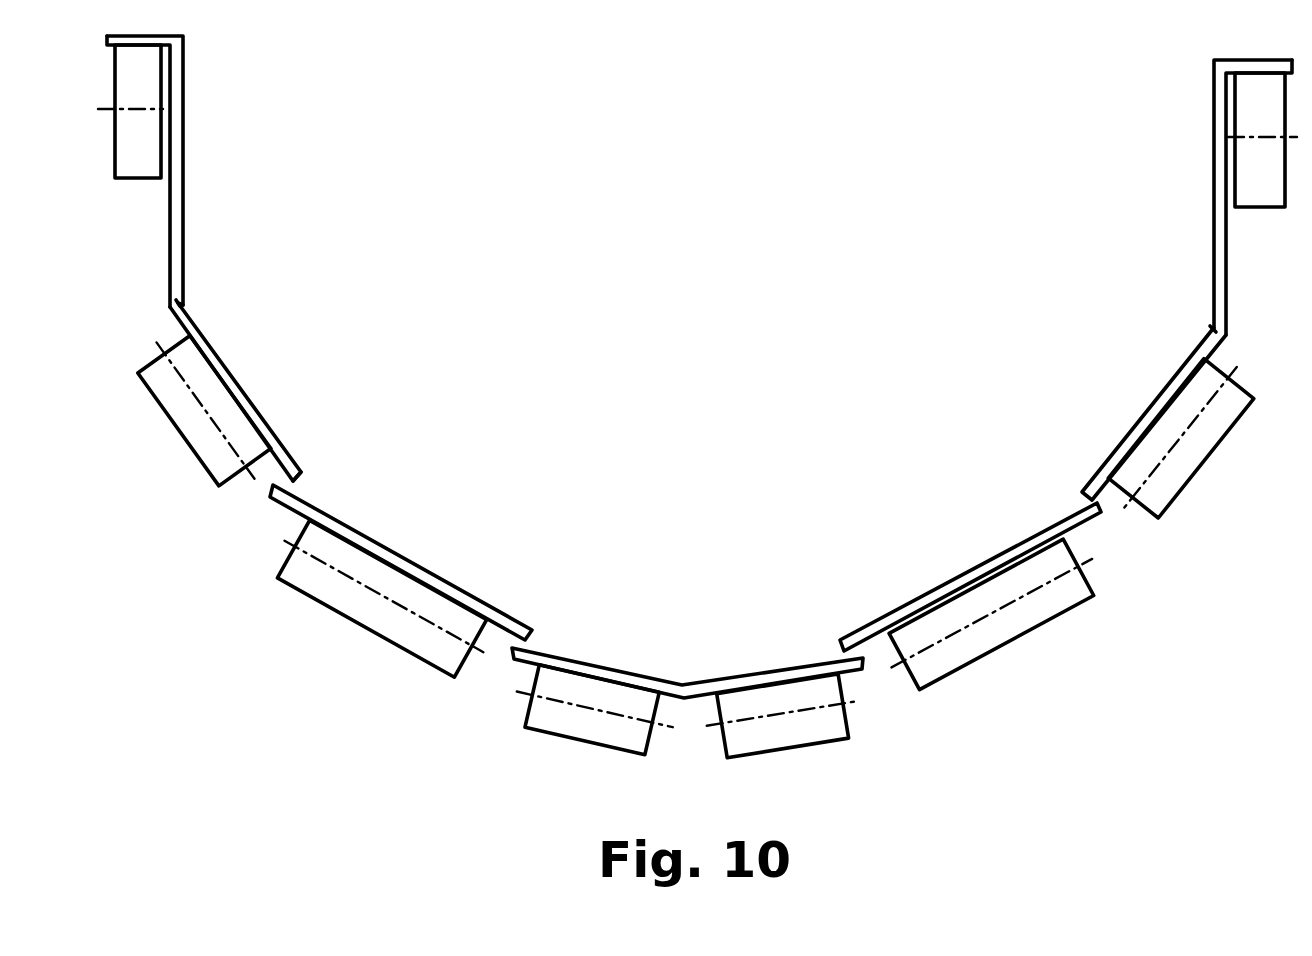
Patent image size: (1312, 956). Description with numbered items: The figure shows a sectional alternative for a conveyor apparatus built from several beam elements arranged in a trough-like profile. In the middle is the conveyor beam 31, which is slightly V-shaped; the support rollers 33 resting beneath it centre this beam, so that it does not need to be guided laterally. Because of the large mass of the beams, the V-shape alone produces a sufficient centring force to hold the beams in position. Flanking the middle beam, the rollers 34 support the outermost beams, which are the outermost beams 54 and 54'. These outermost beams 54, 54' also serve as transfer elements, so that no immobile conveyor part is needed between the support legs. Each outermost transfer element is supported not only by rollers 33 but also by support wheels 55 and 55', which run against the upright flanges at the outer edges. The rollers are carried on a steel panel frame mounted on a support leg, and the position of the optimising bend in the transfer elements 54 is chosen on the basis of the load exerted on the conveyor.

The conveyor beam 31 is at (738, 675).
The support roller 33 is at (192, 427).
The roller 34 is at (363, 615).
The outermost beam 54 is at (204, 258).
The outermost beam 54' is at (1167, 280).
The support wheel 55 is at (198, 111).
The support wheel 55' is at (1192, 140).